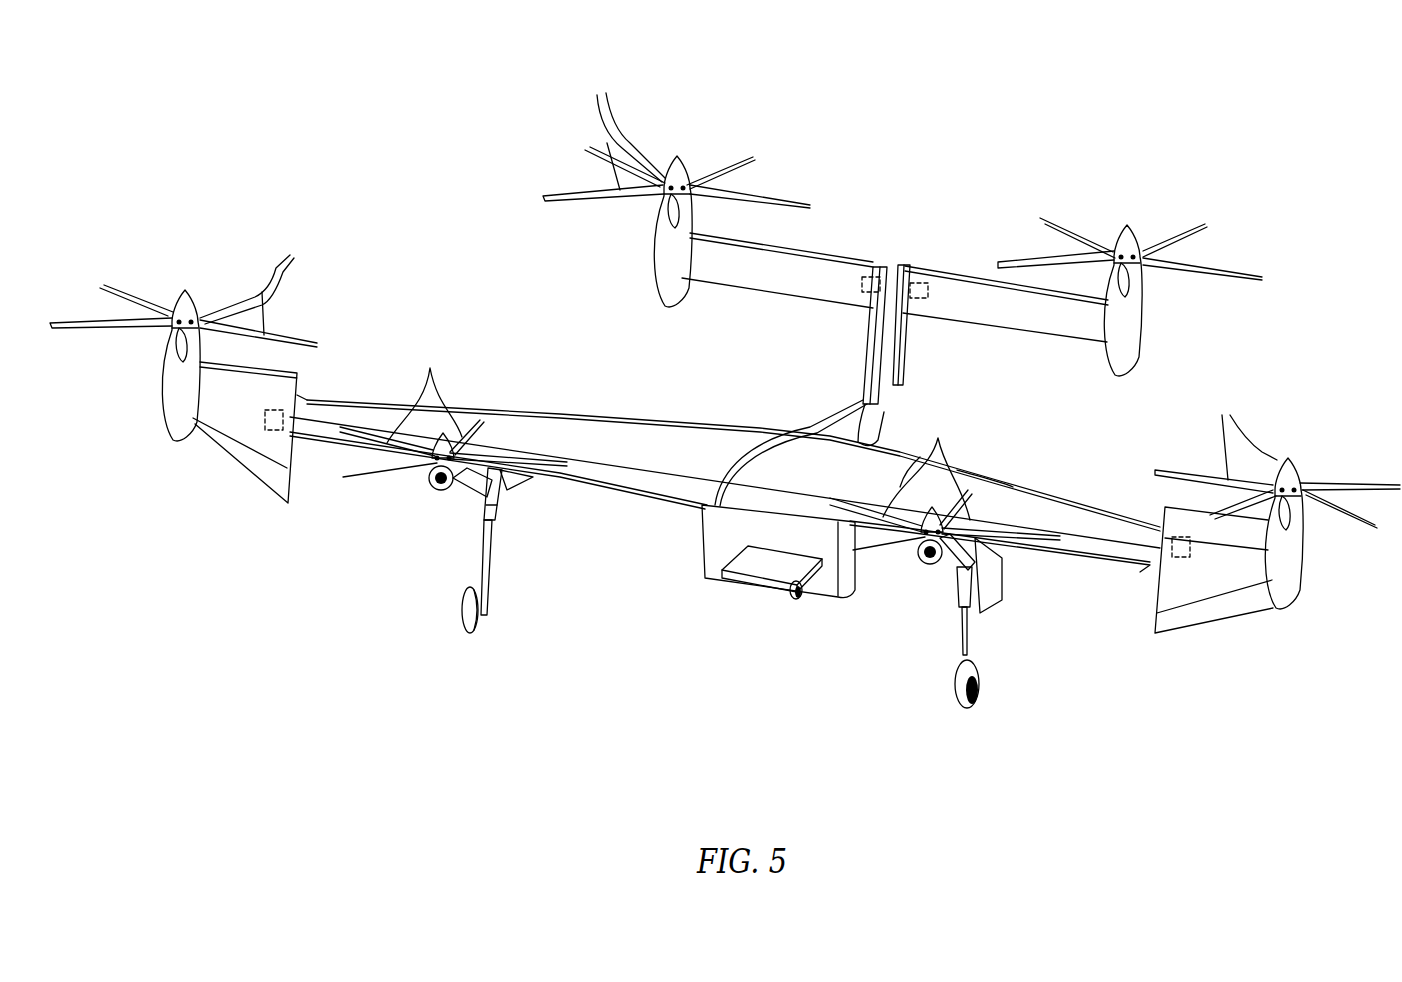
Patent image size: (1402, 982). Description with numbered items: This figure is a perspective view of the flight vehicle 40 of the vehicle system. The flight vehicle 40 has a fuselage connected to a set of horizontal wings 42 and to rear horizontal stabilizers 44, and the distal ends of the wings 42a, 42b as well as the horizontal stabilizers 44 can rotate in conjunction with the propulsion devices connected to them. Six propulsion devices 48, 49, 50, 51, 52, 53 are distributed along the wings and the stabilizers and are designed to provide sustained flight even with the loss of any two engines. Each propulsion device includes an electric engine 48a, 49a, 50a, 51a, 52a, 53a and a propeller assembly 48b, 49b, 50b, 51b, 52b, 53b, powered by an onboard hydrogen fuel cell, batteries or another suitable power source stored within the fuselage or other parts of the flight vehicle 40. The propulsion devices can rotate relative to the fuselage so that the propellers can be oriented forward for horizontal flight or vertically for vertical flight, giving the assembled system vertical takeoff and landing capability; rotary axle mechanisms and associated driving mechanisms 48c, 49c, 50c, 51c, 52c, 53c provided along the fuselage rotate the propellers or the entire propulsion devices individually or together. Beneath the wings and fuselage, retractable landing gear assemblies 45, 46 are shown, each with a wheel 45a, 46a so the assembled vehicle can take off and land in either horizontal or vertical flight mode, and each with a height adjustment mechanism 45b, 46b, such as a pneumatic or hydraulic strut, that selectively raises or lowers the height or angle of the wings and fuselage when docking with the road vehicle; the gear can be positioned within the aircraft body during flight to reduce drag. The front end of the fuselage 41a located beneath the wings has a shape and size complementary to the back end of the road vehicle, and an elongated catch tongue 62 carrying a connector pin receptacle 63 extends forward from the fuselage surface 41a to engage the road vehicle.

The flight vehicle 40 is at (275, 183).
The fuselage front end 41a is at (738, 528).
The horizontal wings 42 is at (802, 469).
The wing distal end 42a is at (285, 388).
The wing distal end 42b is at (1242, 578).
The rear horizontal stabilizers 44 is at (875, 267).
The landing gear assembly 45 is at (498, 560).
The wheel 45a is at (478, 635).
The height adjustment mechanism 45b is at (505, 515).
The landing gear assembly 46 is at (975, 642).
The wheel 46a is at (985, 690).
The height adjustment mechanism 46b is at (975, 585).
The propulsion device 48 is at (185, 286).
The electric engine 48a is at (167, 388).
The propeller assembly 48b is at (292, 262).
The rotary axle mechanism and driving mechanism 48c is at (272, 433).
The propulsion device 49 is at (445, 497).
The electric engine 49a is at (470, 499).
The propeller assembly 49b is at (424, 391).
The rotary axle mechanism and driving mechanism 49c is at (430, 484).
The propulsion device 50 is at (922, 572).
The electric engine 50a is at (940, 580).
The propeller assembly 50b is at (926, 463).
The rotary axle mechanism and driving mechanism 50c is at (915, 562).
The propulsion device 51 is at (1303, 455).
The electric engine 51a is at (1290, 560).
The propeller assembly 51b is at (1237, 429).
The rotary axle mechanism and driving mechanism 51c is at (1180, 560).
The propulsion device 52 is at (676, 152).
The electric engine 52a is at (655, 262).
The propeller assembly 52b is at (619, 126).
The rotary axle mechanism and driving mechanism 52c is at (866, 298).
The propulsion device 53 is at (1124, 215).
The electric engine 53a is at (1128, 327).
The propeller assembly 53b is at (1025, 263).
The rotary axle mechanism and driving mechanism 53c is at (920, 302).
The catch tongue 62 is at (790, 602).
The connector pin receptacle 63 is at (745, 590).